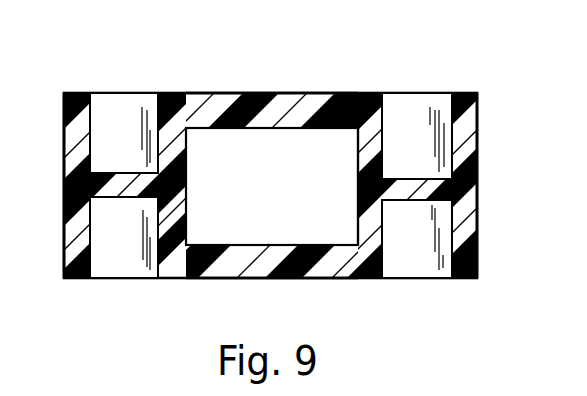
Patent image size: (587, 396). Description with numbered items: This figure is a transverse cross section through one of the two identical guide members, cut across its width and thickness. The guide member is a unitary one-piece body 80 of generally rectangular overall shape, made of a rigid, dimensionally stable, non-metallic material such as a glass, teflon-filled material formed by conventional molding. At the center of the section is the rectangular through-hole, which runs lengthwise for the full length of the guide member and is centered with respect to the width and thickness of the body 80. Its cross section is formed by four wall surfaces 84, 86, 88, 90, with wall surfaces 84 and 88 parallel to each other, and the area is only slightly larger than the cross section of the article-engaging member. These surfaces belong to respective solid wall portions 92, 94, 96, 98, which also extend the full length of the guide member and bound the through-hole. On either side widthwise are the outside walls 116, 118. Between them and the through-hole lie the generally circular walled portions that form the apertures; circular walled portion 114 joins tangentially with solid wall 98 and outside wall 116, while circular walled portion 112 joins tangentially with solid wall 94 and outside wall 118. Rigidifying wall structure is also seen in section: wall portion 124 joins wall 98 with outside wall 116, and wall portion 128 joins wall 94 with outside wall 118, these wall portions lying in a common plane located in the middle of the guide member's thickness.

The body 80 is at (479, 93).
The wall surface 84 is at (281, 144).
The wall surface 86 is at (357, 180).
The wall surface 88 is at (279, 244).
The wall surface 90 is at (187, 197).
The solid wall portion 92 is at (220, 105).
The solid wall portion 94 is at (373, 215).
The solid wall portion 96 is at (252, 265).
The solid wall portion 98 is at (172, 230).
The circular walled portion 112 is at (437, 108).
The circular walled portion 114 is at (107, 253).
The outside wall 116 is at (70, 152).
The outside wall 118 is at (463, 157).
The rigidifying wall portion 124 is at (118, 188).
The rigidifying wall portion 128 is at (402, 190).